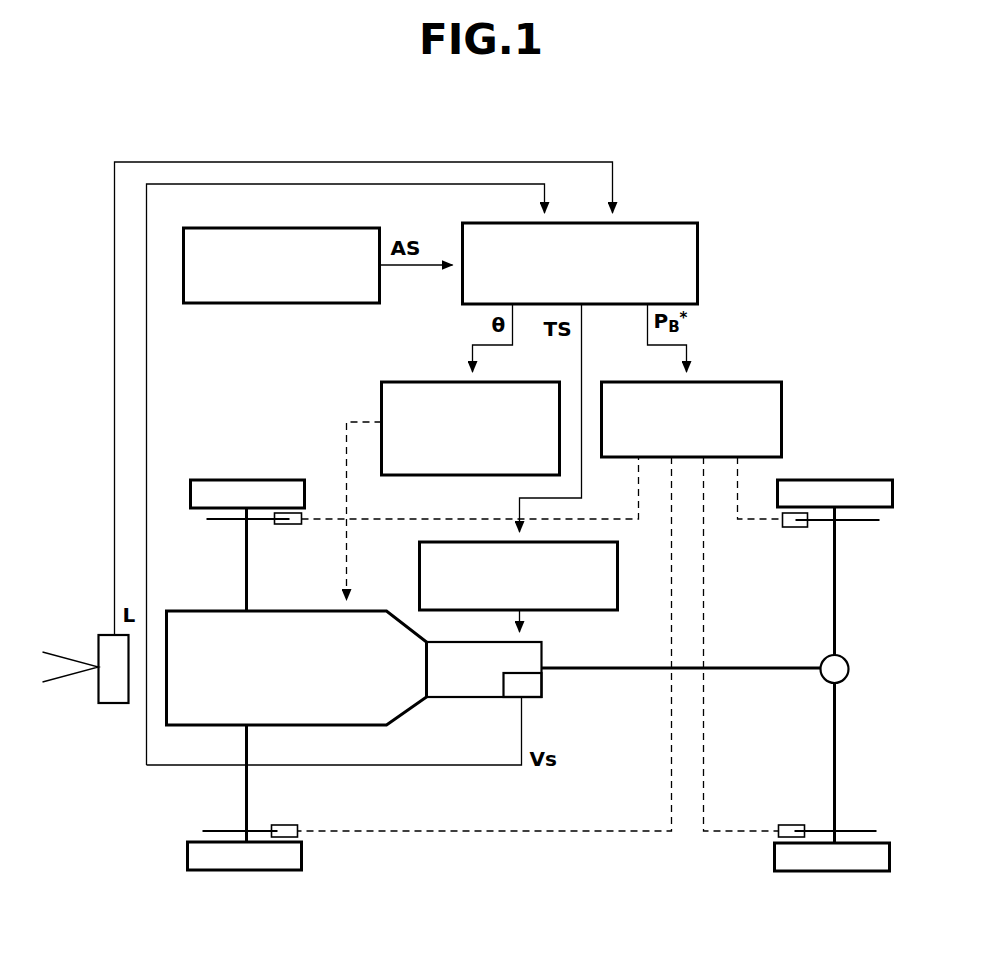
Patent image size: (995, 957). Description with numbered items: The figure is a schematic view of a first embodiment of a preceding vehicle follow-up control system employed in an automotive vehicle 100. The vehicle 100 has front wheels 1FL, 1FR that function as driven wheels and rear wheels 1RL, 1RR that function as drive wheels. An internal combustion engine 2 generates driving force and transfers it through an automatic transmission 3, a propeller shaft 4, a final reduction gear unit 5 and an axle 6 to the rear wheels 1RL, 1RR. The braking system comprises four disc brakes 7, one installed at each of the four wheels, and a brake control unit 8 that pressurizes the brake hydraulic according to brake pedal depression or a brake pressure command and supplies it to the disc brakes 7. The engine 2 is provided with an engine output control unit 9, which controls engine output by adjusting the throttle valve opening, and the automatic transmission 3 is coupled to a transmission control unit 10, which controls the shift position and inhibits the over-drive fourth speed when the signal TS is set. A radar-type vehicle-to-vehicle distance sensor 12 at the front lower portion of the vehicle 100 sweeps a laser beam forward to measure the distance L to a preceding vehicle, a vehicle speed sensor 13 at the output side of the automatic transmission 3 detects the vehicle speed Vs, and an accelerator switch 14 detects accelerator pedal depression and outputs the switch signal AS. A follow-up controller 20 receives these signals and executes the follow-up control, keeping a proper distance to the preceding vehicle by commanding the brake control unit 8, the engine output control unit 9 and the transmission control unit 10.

The automotive vehicle 100 is at (738, 318).
The accelerator switch 14 is at (275, 303).
The follow-up controller 20 is at (688, 222).
The engine output control unit 9 is at (422, 380).
The brake control unit 8 is at (745, 380).
The transmission control unit 10 is at (582, 610).
The internal combustion engine 2 is at (202, 610).
The automatic transmission 3 is at (457, 690).
The vehicle speed sensor 13 is at (530, 683).
The propeller shaft 4 is at (738, 665).
The final reduction gear unit 5 is at (849, 669).
The axle 6 is at (838, 597).
The disc brake 7 is at (268, 525).
The vehicle-to-vehicle distance sensor 12 is at (113, 705).
The front right wheel 1FR is at (218, 478).
The rear right wheel 1RR is at (842, 478).
The front left wheel 1FL is at (288, 872).
The rear left wheel 1RL is at (835, 872).